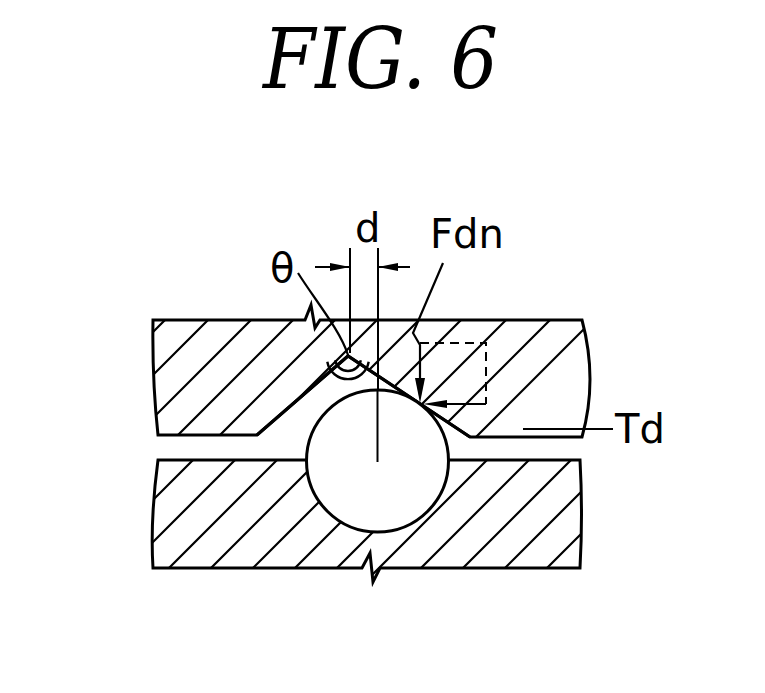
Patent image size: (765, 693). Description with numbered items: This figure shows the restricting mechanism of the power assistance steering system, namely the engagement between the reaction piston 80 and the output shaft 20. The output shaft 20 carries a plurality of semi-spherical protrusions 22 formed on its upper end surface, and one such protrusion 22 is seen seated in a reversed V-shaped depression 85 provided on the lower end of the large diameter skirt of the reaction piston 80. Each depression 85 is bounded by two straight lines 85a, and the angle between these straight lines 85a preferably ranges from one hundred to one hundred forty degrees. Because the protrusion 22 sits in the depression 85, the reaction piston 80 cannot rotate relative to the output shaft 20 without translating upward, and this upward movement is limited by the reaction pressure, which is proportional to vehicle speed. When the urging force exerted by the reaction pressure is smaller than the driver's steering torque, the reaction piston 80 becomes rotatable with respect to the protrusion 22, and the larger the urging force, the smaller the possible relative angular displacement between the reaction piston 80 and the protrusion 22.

The reaction piston 80 is at (592, 308).
The reversed V-shaped depression 85 is at (283, 415).
The straight line 85a is at (342, 362).
The semi-spherical protrusion 22 is at (385, 482).
The output shaft 20 is at (527, 518).